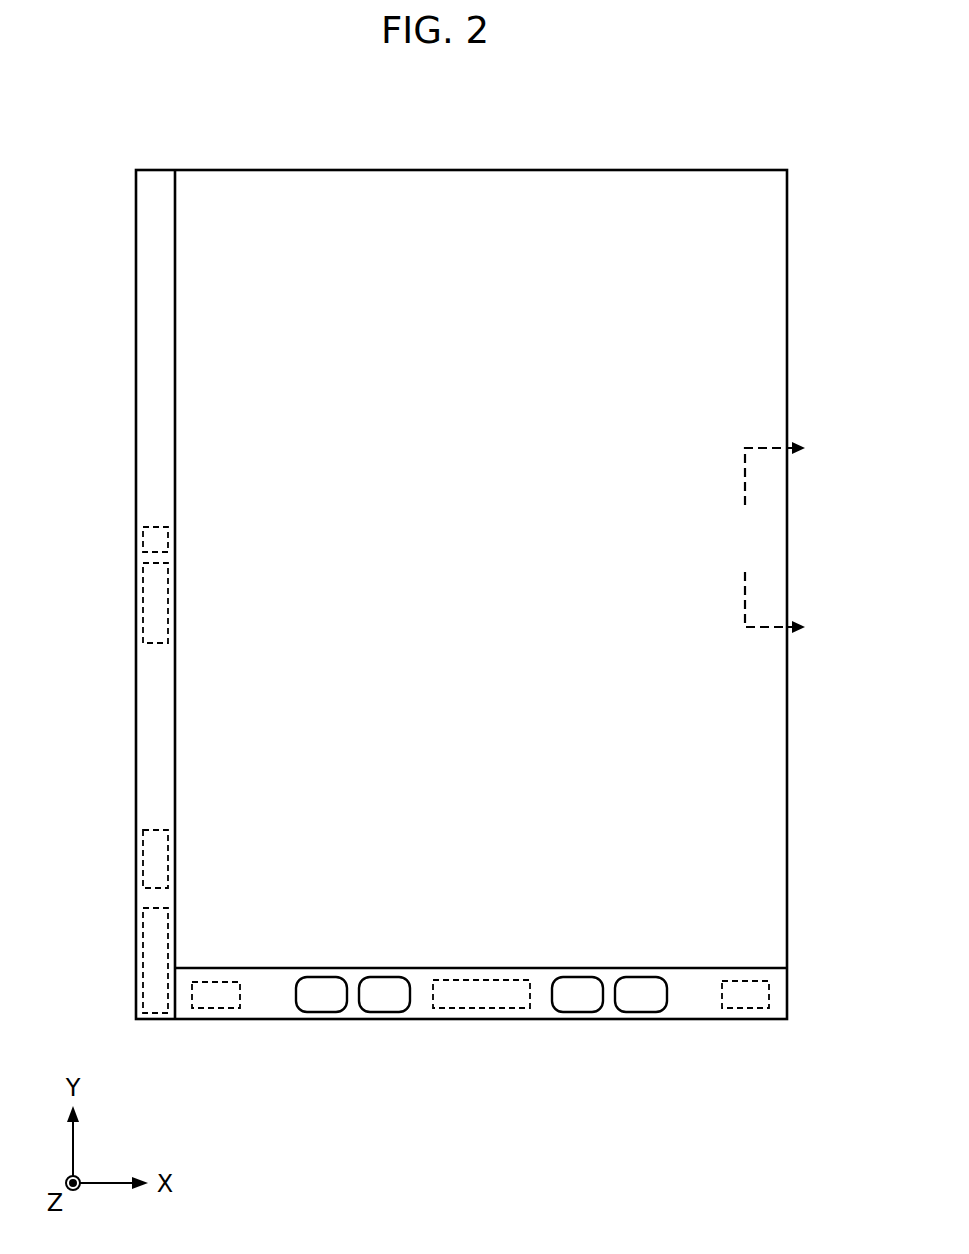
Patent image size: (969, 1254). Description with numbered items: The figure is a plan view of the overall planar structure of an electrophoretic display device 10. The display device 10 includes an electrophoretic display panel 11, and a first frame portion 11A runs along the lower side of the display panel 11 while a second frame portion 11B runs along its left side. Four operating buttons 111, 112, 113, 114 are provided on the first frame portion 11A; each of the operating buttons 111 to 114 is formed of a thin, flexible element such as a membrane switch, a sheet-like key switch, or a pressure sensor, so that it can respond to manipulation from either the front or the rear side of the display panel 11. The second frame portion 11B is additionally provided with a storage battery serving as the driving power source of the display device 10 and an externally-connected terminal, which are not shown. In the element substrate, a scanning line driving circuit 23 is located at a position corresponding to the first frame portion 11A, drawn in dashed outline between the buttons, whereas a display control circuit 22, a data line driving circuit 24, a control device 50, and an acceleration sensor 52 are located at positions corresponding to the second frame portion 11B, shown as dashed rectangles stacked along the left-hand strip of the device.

The electrophoretic display device 10 is at (786, 128).
The electrophoretic display panel 11 is at (677, 171).
The first frame portion 11A is at (243, 1020).
The second frame portion 11B is at (157, 1020).
The acceleration sensor 52 is at (143, 532).
The data line driving circuit 24 is at (143, 591).
The display control circuit 22 is at (143, 848).
The control device 50 is at (143, 942).
The operating button 111 is at (321, 1005).
The operating button 112 is at (384, 1005).
The scanning line driving circuit 23 is at (476, 1008).
The operating button 113 is at (575, 1005).
The operating button 114 is at (641, 1005).